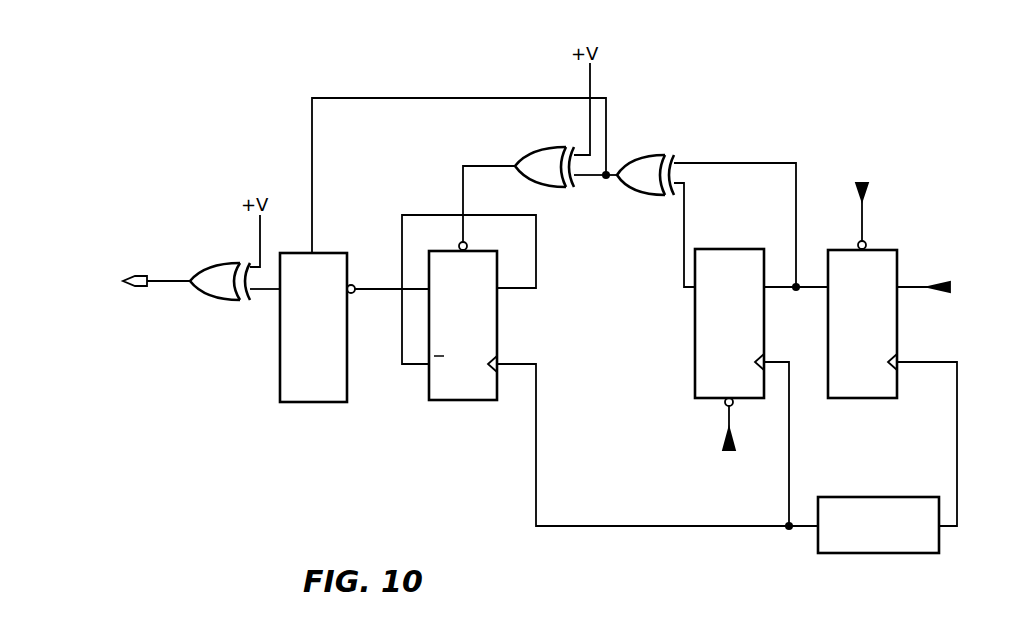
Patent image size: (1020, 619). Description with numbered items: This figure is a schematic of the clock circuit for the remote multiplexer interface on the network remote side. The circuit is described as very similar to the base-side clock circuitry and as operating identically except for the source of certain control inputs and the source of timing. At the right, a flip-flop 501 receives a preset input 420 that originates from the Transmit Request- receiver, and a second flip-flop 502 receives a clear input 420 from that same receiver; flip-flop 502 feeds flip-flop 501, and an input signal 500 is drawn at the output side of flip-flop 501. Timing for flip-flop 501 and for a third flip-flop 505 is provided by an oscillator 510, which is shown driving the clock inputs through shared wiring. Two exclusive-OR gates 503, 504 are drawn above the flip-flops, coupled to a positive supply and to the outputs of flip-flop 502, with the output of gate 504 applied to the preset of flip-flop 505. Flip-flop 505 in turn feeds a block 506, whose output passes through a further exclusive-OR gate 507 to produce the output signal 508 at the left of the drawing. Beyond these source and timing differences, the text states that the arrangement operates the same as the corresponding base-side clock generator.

The preset/clear input 420 is at (863, 213).
The input signal 500 is at (913, 286).
The flip-flop 501 is at (862, 319).
The flip-flop 502 is at (729, 327).
The exclusive-OR gate 503 is at (637, 152).
The exclusive-OR gate 504 is at (560, 148).
The flip-flop 505 is at (463, 321).
The delay element 506 is at (317, 327).
The exclusive-OR gate 507 is at (227, 262).
The output signal 508 is at (166, 291).
The oscillator 510 is at (855, 497).